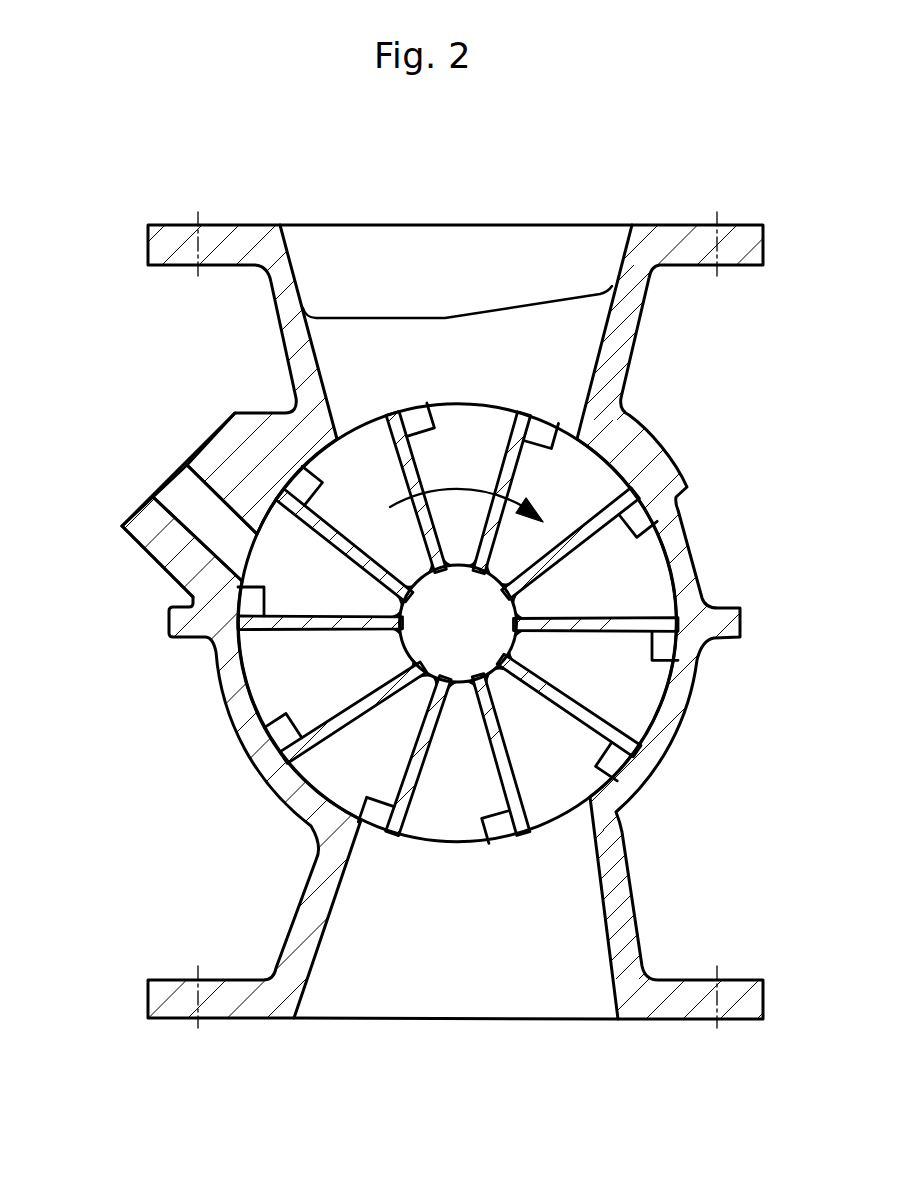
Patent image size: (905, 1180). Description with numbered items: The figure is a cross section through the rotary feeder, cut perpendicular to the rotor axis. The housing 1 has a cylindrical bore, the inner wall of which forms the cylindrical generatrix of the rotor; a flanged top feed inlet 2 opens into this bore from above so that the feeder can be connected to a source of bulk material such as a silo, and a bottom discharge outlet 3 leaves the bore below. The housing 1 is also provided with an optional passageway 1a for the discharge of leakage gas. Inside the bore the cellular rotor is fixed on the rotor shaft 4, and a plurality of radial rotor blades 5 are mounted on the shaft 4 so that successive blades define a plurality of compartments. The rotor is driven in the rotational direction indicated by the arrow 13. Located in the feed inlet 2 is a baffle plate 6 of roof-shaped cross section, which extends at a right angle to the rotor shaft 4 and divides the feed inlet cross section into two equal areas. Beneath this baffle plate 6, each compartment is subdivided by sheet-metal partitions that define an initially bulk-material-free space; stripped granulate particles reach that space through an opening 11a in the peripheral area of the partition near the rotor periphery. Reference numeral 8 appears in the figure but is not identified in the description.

The housing 1 is at (244, 735).
The passageway 1a is at (222, 541).
The feed inlet 2 is at (272, 296).
The discharge outlet 3 is at (303, 906).
The rotor shaft 4 is at (466, 634).
The rotor blades 5 is at (316, 527).
The baffle plate 6 is at (378, 318).
The housing wall 8 is at (667, 587).
The opening 11a is at (417, 423).
The arrow 13 is at (484, 491).